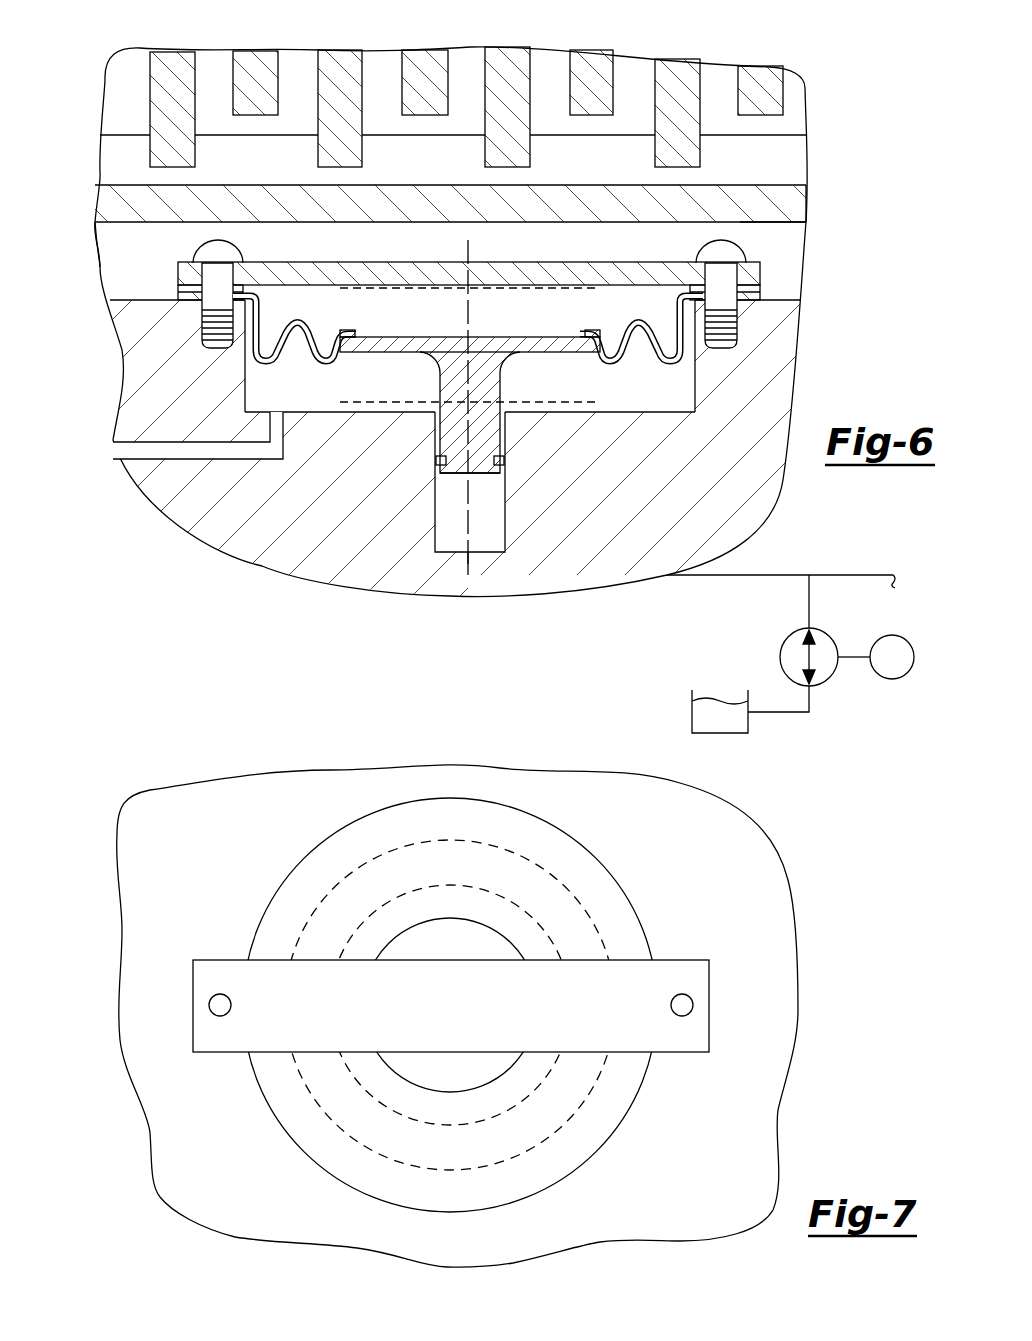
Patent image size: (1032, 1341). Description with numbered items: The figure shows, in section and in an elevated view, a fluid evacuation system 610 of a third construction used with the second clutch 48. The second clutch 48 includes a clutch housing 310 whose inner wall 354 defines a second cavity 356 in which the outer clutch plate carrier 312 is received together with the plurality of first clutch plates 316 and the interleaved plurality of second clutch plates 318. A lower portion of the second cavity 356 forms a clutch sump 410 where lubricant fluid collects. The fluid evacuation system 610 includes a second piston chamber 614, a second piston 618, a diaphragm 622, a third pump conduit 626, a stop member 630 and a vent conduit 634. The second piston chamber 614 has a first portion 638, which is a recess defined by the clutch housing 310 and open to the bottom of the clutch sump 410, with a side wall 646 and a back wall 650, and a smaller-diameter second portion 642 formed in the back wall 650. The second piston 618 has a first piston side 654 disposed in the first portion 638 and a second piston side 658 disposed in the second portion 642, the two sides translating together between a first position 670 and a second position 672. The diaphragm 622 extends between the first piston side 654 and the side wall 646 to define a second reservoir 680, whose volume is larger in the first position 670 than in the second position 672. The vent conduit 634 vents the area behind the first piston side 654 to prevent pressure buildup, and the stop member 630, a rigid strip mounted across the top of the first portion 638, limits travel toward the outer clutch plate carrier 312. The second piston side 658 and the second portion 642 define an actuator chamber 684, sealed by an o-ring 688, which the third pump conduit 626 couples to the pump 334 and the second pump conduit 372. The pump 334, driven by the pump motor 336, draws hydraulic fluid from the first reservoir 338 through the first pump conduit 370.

In FIG. 6, the second clutch 48 is at (84, 86).
In FIG. 7, the second clutch 48 is at (141, 1207).
In FIG. 6, the clutch housing 310 is at (133, 383).
In FIG. 7, the clutch housing 310 is at (142, 815).
In FIG. 6, the outer clutch plate carrier 312 is at (795, 203).
In FIG. 6, the first clutch plates 316 is at (178, 75).
In FIG. 6, the second clutch plates 318 is at (256, 72).
In FIG. 6, the pump 334 is at (778, 650).
In FIG. 6, the pump motor 336 is at (890, 635).
In FIG. 6, the first reservoir 338 is at (692, 712).
In FIG. 6, the inner wall 354 is at (140, 300).
In FIG. 7, the inner wall 354 is at (148, 852).
In FIG. 6, the second cavity 356 is at (785, 240).
In FIG. 6, the first pump conduit 370 is at (787, 712).
In FIG. 6, the second pump conduit 372 is at (858, 575).
In FIG. 6, the clutch sump 410 is at (110, 255).
In FIG. 6, the fluid evacuation system 610 is at (710, 403).
In FIG. 7, the fluid evacuation system 610 is at (638, 878).
In FIG. 6, the second piston chamber 614 is at (243, 395).
In FIG. 7, the second piston chamber 614 is at (282, 885).
In FIG. 6, the second piston 618 is at (450, 423).
In FIG. 6, the diaphragm 622 is at (645, 318).
In FIG. 7, the diaphragm 622 is at (597, 1103).
In FIG. 6, the third pump conduit 626 is at (797, 575).
In FIG. 6, the stop member 630 is at (282, 262).
In FIG. 7, the stop member 630 is at (258, 1032).
In FIG. 6, the vent conduit 634 is at (175, 442).
In FIG. 6, the first portion 638 is at (697, 382).
In FIG. 6, the second portion 642 is at (433, 528).
In FIG. 6, the side wall 646 is at (243, 368).
In FIG. 6, the back wall 650 is at (643, 413).
In FIG. 6, the first piston side 654 is at (552, 337).
In FIG. 7, the first piston side 654 is at (445, 1066).
In FIG. 6, the second piston side 658 is at (482, 473).
In FIG. 6, the first position 670 is at (548, 402).
In FIG. 6, the second position 672 is at (420, 285).
In FIG. 6, the second reservoir 680 is at (488, 318).
In FIG. 7, the second reservoir 680 is at (322, 940).
In FIG. 6, the actuator chamber 684 is at (452, 537).
In FIG. 6, the o-ring 688 is at (436, 462).